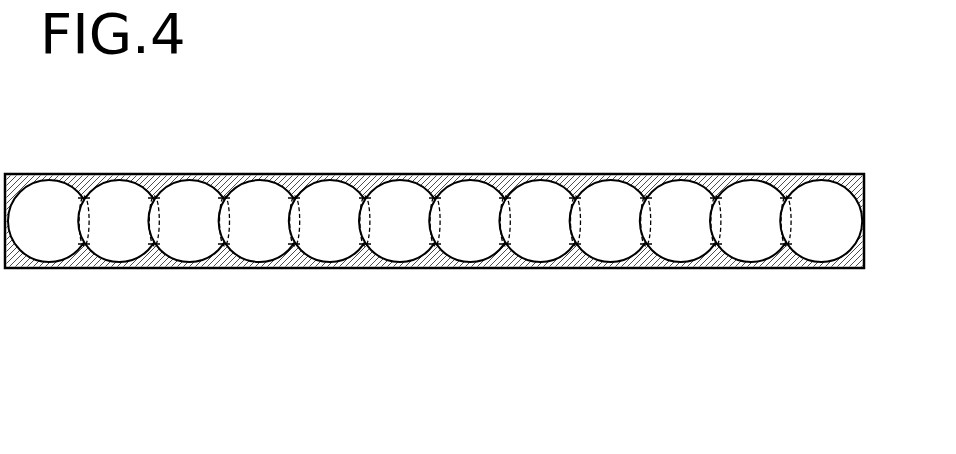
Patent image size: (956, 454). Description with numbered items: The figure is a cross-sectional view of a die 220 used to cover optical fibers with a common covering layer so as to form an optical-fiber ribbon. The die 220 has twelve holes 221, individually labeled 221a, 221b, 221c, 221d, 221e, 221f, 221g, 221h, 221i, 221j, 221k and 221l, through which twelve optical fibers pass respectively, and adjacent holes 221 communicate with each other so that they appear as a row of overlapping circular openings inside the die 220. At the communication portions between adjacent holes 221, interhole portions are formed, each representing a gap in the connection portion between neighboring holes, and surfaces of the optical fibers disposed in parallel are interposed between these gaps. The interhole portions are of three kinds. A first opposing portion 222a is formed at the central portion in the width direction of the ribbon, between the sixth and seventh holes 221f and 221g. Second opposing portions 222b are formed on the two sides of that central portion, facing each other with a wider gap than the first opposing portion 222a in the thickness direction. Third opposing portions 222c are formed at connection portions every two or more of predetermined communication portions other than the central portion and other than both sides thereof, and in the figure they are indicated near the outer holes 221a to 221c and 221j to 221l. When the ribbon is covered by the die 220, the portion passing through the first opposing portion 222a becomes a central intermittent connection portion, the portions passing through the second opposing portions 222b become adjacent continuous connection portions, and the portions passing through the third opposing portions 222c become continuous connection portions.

The die 220 is at (803, 141).
The holes 221 is at (435, 279).
The hole 221a is at (53, 233).
The hole 221b is at (123, 233).
The hole 221c is at (193, 233).
The hole 221d is at (264, 233).
The hole 221e is at (334, 233).
The hole 221f is at (404, 233).
The hole 221g is at (474, 233).
The hole 221h is at (544, 233).
The hole 221i is at (615, 233).
The hole 221j is at (685, 233).
The hole 221k is at (755, 233).
The hole 221l is at (821, 252).
The first opposing portion 222a is at (437, 178).
The second opposing portions 222b is at (368, 173).
The third opposing portions 222c is at (83, 258).